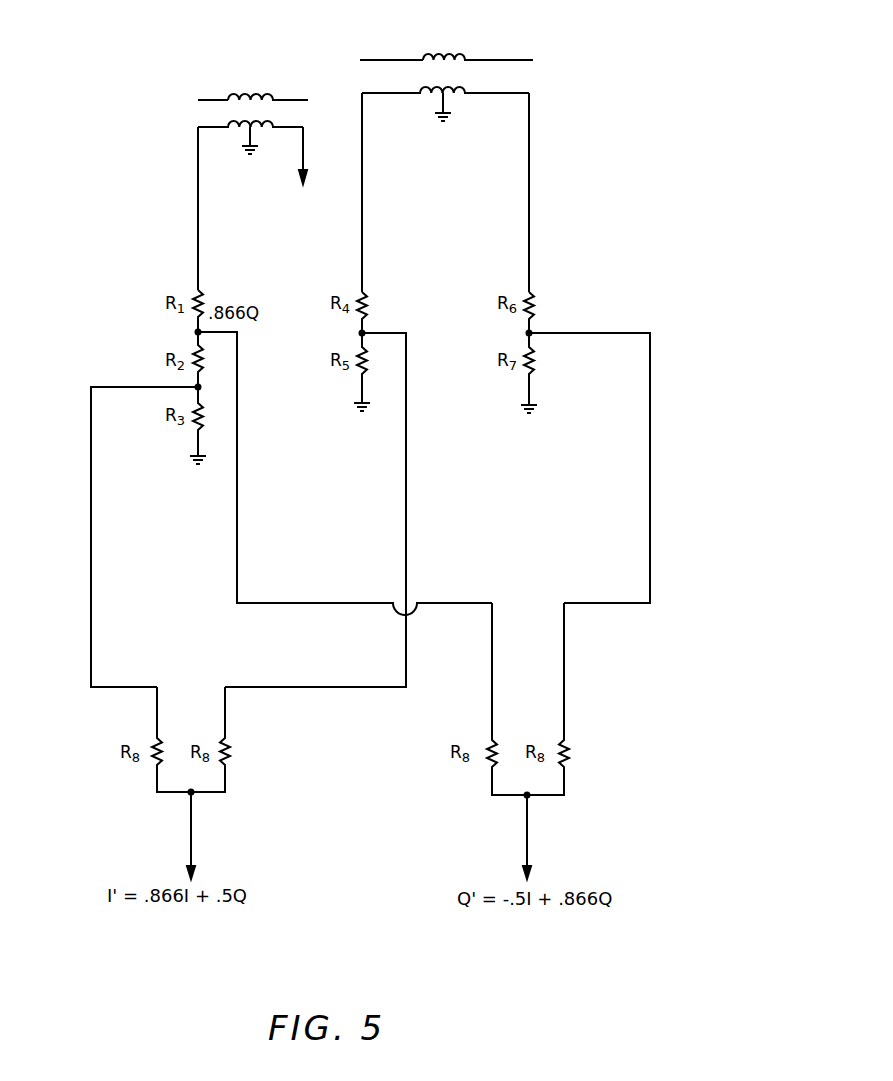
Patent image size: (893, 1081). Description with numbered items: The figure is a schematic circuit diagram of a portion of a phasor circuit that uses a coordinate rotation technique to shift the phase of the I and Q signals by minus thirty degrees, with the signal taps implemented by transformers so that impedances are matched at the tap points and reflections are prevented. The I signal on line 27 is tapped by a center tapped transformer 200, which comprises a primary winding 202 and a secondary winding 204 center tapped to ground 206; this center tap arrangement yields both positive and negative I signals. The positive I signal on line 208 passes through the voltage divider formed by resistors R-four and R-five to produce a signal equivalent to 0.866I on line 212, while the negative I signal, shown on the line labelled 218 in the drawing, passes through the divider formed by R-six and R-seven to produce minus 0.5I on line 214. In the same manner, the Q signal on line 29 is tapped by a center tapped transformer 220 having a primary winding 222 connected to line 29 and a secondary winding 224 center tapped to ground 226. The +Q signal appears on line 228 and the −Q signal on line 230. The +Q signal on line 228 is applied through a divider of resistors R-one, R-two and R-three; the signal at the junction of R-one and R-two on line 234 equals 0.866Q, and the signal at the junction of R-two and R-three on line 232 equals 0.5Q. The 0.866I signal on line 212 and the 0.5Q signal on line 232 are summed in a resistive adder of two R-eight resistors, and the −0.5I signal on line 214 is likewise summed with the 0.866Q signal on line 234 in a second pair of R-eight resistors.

The line 27 is at (366, 62).
The line 29 is at (200, 100).
The center tapped transformer 200 is at (457, 77).
The primary winding 202 is at (437, 56).
The secondary winding 204 is at (430, 102).
The ground 206 is at (444, 125).
The line 208 is at (362, 212).
The line 212 is at (406, 455).
The line 214 is at (650, 455).
The -I conductor 218 is at (530, 162).
The center tapped transformer 220 is at (267, 117).
The primary winding 222 is at (255, 98).
The secondary winding 224 is at (238, 125).
The ground 226 is at (272, 183).
The line 228 is at (198, 213).
The line 230 is at (306, 188).
The line 232 is at (109, 528).
The line 234 is at (237, 455).